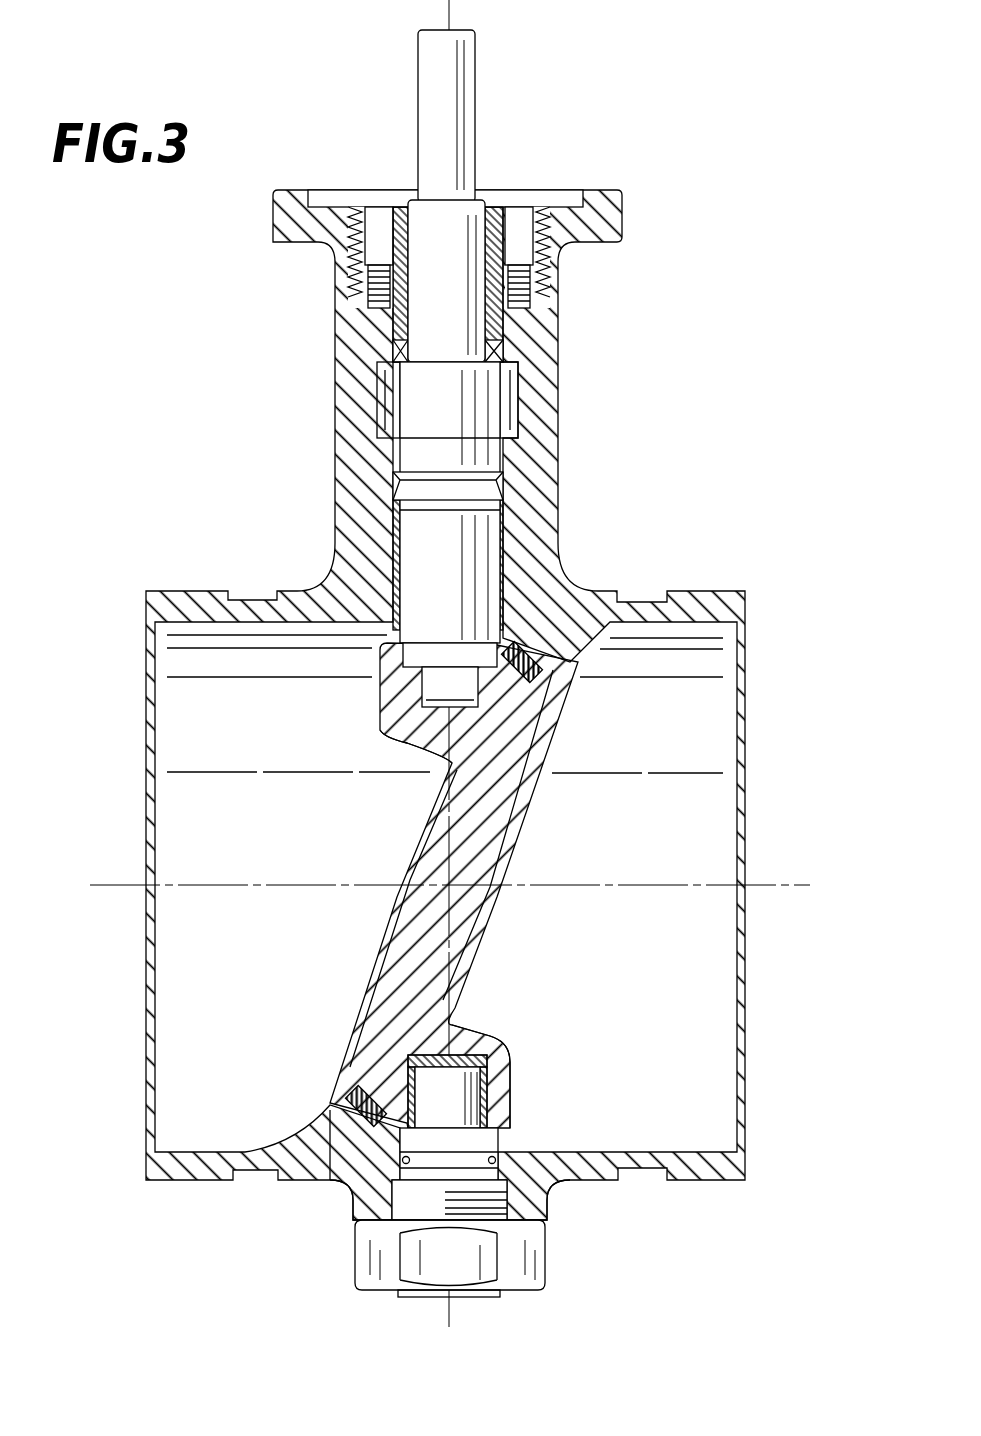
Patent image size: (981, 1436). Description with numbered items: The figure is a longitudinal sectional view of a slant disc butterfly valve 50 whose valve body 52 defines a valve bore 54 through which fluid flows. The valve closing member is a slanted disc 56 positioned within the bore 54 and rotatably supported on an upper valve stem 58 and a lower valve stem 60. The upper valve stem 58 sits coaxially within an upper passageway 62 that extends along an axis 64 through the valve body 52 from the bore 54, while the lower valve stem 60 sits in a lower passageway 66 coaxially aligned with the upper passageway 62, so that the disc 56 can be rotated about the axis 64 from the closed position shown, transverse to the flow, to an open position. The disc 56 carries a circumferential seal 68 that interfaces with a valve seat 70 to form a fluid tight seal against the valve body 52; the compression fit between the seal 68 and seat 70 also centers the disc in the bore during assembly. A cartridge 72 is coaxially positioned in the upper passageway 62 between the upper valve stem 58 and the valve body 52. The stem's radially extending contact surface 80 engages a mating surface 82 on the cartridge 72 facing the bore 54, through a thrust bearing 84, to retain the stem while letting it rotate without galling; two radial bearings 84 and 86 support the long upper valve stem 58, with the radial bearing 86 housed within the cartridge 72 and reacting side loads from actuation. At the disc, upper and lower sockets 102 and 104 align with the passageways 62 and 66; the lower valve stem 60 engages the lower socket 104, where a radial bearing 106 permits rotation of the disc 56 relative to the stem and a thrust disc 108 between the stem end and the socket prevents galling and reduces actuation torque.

The slant disc butterfly valve 50 is at (703, 225).
The valve body 52 is at (690, 592).
The valve bore 54 is at (672, 852).
The slanted disc 56 is at (460, 978).
The upper valve stem 58 is at (490, 413).
The lower valve stem 60 is at (468, 1118).
The upper passageway 62 is at (503, 517).
The axis 64 is at (450, 1).
The lower passageway 66 is at (547, 1193).
The circumferential seal 68 is at (340, 1165).
The valve seat 70 is at (343, 1075).
The cartridge 72 is at (515, 283).
The contact surface 80 is at (385, 395).
The mating surface 82 is at (393, 360).
The thrust bearing 84 is at (500, 362).
The radial bearing 86 is at (395, 252).
The upper socket 102 is at (385, 692).
The lower socket 104 is at (497, 1053).
The radial bearing 106 is at (484, 1086).
The thrust disc 108 is at (462, 1035).